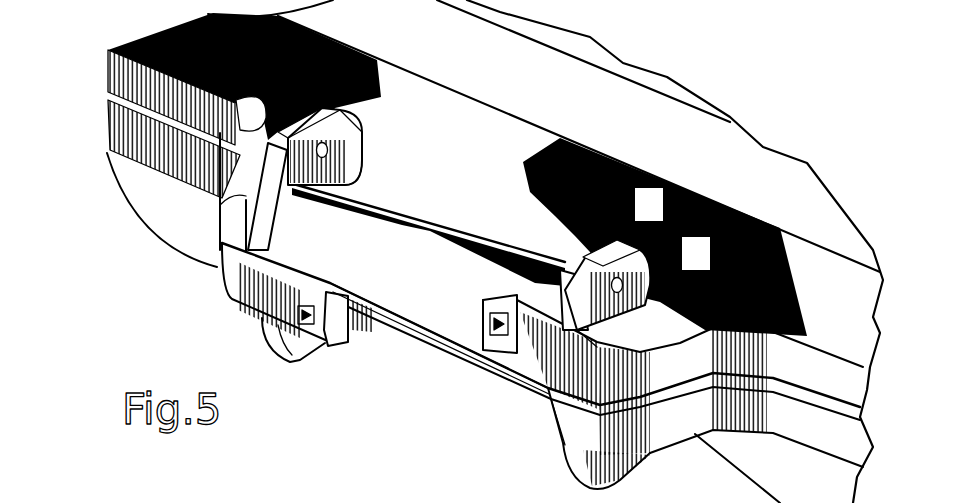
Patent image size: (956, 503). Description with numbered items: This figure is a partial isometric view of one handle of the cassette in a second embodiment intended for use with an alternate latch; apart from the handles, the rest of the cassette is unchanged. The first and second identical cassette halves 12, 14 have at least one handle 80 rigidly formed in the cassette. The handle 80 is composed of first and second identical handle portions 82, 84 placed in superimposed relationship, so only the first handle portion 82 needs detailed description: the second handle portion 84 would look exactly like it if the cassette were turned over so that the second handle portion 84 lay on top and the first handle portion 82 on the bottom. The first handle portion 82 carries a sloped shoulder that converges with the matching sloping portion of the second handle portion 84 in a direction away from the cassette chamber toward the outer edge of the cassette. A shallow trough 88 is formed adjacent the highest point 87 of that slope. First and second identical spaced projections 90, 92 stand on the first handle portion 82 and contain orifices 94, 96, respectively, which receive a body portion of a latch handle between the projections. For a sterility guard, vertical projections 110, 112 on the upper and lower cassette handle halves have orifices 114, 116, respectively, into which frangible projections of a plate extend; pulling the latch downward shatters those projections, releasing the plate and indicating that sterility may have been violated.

The first cassette half 12 is at (133, 80).
The second cassette half 14 is at (123, 137).
The handle 80 is at (477, 63).
The first handle portion 82 is at (452, 192).
The second handle portion 84 is at (392, 390).
The highest point of the slope 87 is at (397, 212).
The shallow trough 88 is at (486, 233).
The first projection 90 is at (333, 169).
The second projection 92 is at (649, 204).
The orifice 94 is at (332, 157).
The orifice 96 is at (635, 283).
The vertical projection 110 is at (345, 338).
The vertical projection 112 is at (483, 368).
The orifice 114 is at (296, 340).
The orifice 116 is at (483, 328).